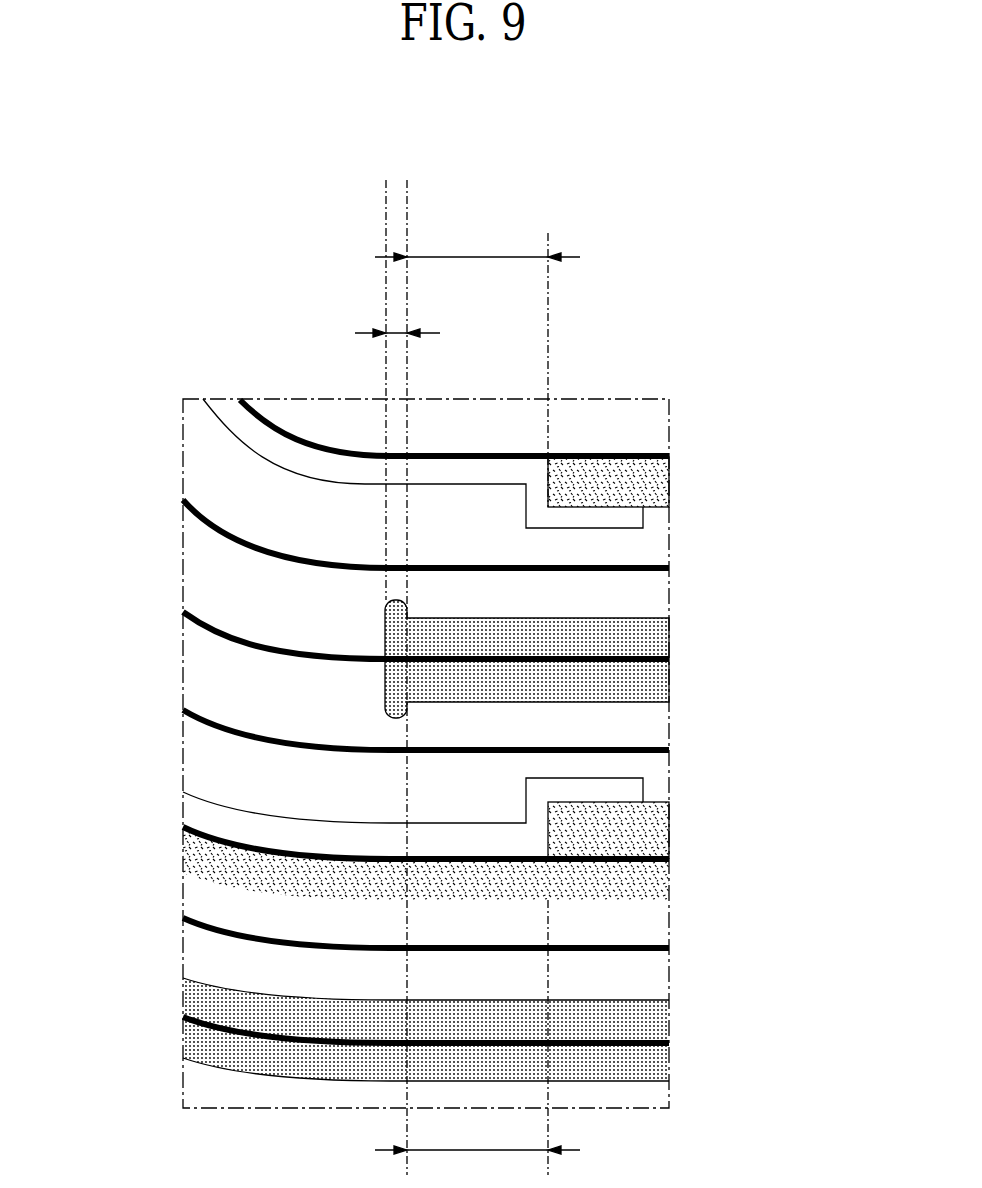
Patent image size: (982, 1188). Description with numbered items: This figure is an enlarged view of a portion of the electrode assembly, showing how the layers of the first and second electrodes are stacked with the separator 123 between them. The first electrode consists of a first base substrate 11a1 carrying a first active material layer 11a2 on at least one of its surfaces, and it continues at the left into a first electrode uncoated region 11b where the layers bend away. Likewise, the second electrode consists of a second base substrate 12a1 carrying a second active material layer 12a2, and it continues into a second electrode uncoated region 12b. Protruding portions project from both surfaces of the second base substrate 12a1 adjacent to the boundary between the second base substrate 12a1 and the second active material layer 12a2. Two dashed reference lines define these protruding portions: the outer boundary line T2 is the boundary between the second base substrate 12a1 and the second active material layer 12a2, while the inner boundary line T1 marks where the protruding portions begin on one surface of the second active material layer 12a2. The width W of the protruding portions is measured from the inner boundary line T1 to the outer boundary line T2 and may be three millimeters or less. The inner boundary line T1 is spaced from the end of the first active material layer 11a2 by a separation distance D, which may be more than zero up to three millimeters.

The first base substrate 11a1 is at (607, 452).
The first active material layer 11a2 is at (667, 475).
The first electrode uncoated region 11b is at (250, 449).
The second base substrate 12a1 is at (669, 659).
The second active material layer 12a2 is at (660, 635).
The second electrode uncoated region 12b is at (222, 637).
The separator 123 is at (669, 568).
The inner boundary line T1 is at (407, 193).
The outer boundary line T2 is at (386, 195).
The separation distance D is at (477, 702).
The width of the protruding portions W is at (397, 317).